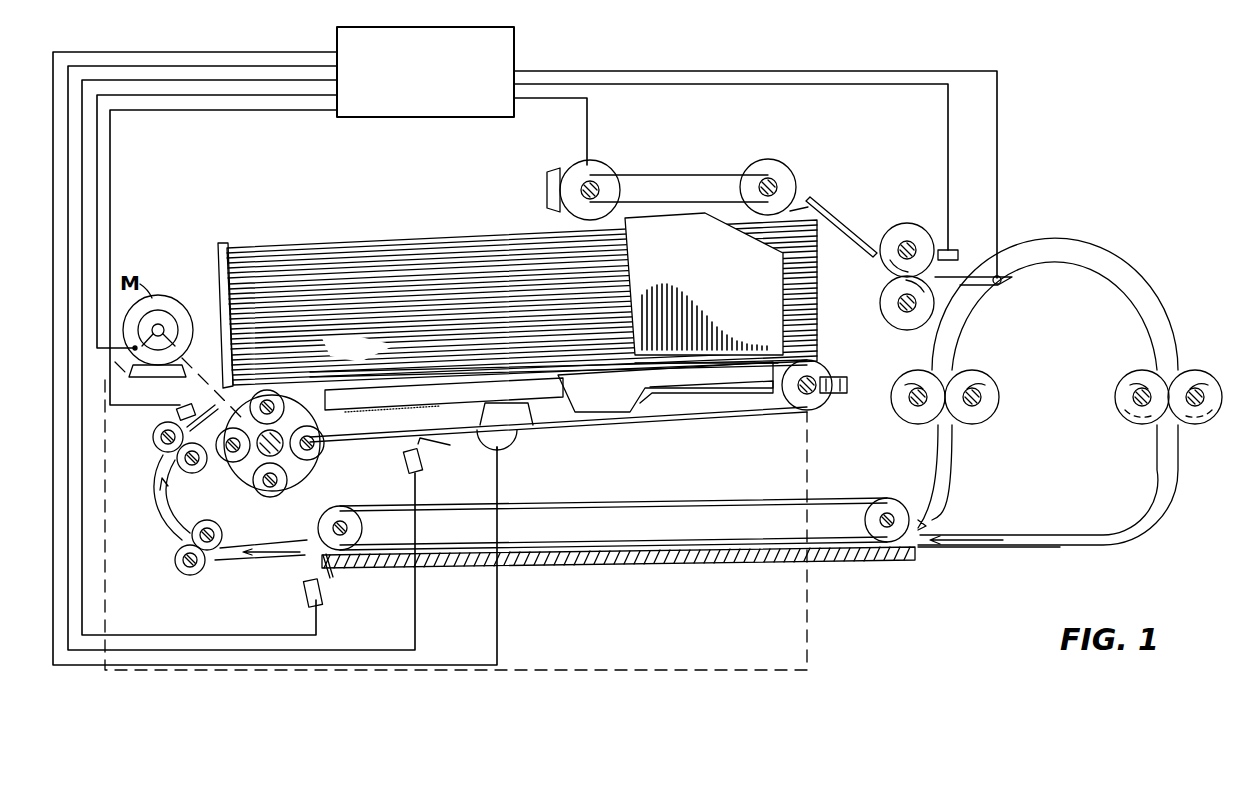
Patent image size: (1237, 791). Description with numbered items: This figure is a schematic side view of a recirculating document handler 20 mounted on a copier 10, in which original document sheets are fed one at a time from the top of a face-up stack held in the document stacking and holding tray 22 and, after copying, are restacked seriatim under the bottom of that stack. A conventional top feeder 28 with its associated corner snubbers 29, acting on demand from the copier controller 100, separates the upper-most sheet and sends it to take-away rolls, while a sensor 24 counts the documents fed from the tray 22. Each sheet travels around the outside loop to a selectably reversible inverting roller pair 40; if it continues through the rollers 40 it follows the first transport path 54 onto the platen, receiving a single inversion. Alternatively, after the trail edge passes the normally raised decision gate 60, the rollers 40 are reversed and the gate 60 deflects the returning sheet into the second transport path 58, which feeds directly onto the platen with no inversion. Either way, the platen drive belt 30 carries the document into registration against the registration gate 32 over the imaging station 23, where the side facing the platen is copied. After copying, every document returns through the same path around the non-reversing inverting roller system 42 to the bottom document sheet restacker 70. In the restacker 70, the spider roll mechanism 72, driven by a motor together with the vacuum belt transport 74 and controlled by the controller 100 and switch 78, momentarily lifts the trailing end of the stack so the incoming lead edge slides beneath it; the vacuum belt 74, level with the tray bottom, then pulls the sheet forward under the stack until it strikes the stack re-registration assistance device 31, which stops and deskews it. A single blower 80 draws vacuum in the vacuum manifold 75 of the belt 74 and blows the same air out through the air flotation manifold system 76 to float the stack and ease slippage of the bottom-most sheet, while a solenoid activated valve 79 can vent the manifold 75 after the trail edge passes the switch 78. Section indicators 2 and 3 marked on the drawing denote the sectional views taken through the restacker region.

The copier controller 100 is at (516, 34).
The top feeder 28 is at (758, 163).
The corner snubbers 29 is at (820, 216).
The sensor 24 is at (958, 252).
The recirculating document handler 20 is at (1024, 236).
The decision gate 60 is at (1003, 284).
The second transport path 58 is at (953, 480).
The inverting roller pair 40 is at (1196, 368).
The first transport path 54 is at (985, 552).
The vacuum belt transport 74 is at (750, 418).
The stack re-registration assistance device 31 is at (822, 372).
The document stacking and holding tray 22 is at (584, 418).
The air flotation manifold system 76 is at (640, 405).
The vacuum manifold 75 is at (385, 425).
The blower 80 is at (537, 440).
The solenoid activated valve 79 is at (438, 450).
The bottom document sheet restacker 70 is at (465, 459).
The switch 78 is at (180, 408).
The spider roll mechanism 72 is at (232, 470).
The inverting roller document feeding system 42 is at (160, 515).
The platen drive belt 30 is at (680, 530).
The imaging station 23 is at (742, 568).
The copier 10 is at (694, 584).
The registration gate 32 is at (298, 578).
The document stack 3 is at (345, 357).
The section line 2 is at (205, 343).